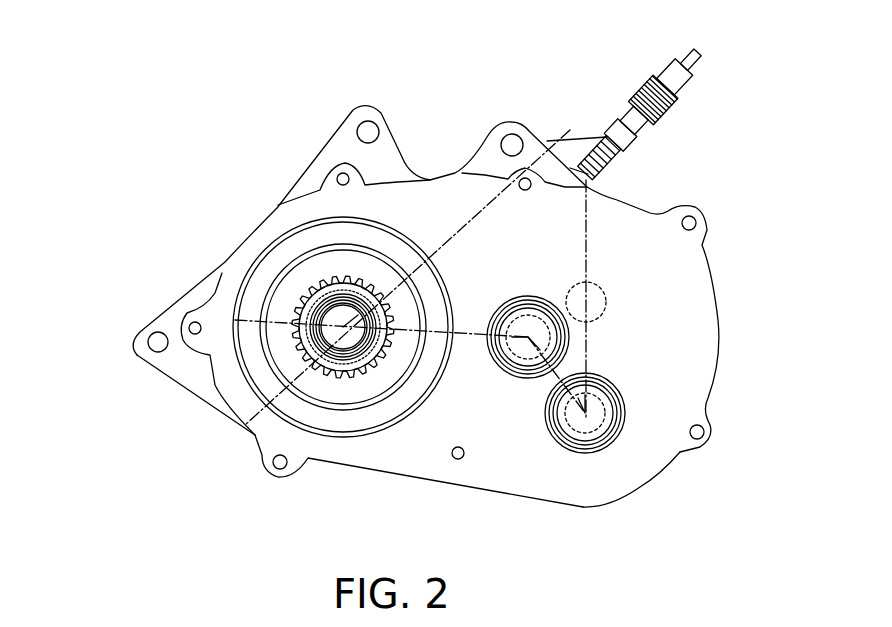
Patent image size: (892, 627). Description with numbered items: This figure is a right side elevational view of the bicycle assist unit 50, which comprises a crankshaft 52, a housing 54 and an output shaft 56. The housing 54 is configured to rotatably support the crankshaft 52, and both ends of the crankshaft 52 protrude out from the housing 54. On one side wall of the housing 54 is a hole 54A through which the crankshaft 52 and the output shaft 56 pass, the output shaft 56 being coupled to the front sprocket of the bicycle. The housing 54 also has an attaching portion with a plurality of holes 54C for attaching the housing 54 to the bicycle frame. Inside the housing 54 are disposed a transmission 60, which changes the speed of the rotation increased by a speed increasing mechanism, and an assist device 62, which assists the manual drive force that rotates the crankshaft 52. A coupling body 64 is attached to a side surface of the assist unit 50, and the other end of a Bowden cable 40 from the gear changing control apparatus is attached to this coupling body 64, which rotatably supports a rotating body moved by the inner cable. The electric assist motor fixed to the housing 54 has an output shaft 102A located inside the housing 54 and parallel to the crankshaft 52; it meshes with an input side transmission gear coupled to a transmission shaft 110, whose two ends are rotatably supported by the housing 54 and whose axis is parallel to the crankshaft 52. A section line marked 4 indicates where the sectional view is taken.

The section line 4- 4 is at (556, 125).
The cable 40 is at (683, 62).
The assist unit 50 is at (737, 137).
The crankshaft 52 is at (333, 277).
The housing 54 is at (662, 470).
The hole 54A is at (215, 277).
The holes 54C is at (357, 133).
The output shaft 56 is at (267, 403).
The transmission 60 is at (338, 482).
The assist device 62 is at (614, 518).
The coupling body 64 is at (462, 162).
The output shaft 102A is at (606, 302).
The transmission shaft 110 is at (610, 382).